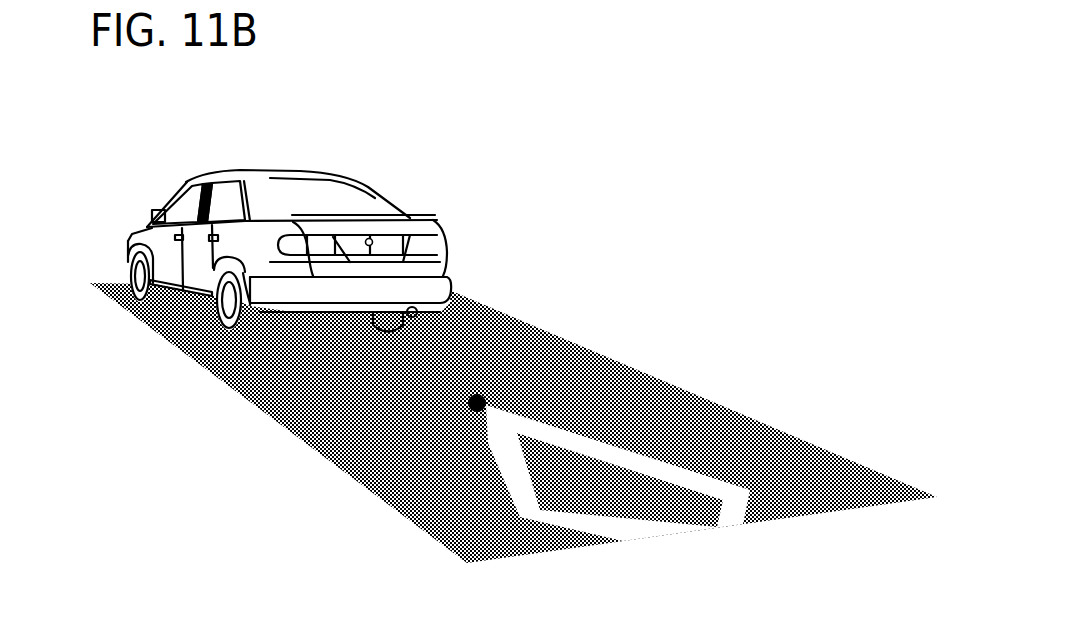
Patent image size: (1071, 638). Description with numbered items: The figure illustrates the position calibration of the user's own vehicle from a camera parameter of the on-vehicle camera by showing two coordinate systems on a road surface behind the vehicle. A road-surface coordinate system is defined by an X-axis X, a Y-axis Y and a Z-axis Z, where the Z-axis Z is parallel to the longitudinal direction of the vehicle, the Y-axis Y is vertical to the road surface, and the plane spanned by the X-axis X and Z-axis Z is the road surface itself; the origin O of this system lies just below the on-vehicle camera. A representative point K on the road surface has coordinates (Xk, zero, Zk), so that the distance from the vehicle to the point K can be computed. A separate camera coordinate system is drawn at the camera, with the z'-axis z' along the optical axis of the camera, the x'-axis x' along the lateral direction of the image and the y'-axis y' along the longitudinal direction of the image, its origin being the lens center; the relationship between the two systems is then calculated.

The representative point K is at (489, 394).
The origin O is at (368, 369).
The X-axis X is at (237, 371).
The Y-axis Y is at (369, 349).
The Z-axis Z is at (369, 349).
The x'-axis x' is at (456, 262).
The y'-axis y' is at (326, 321).
The z'-axis z' is at (409, 313).